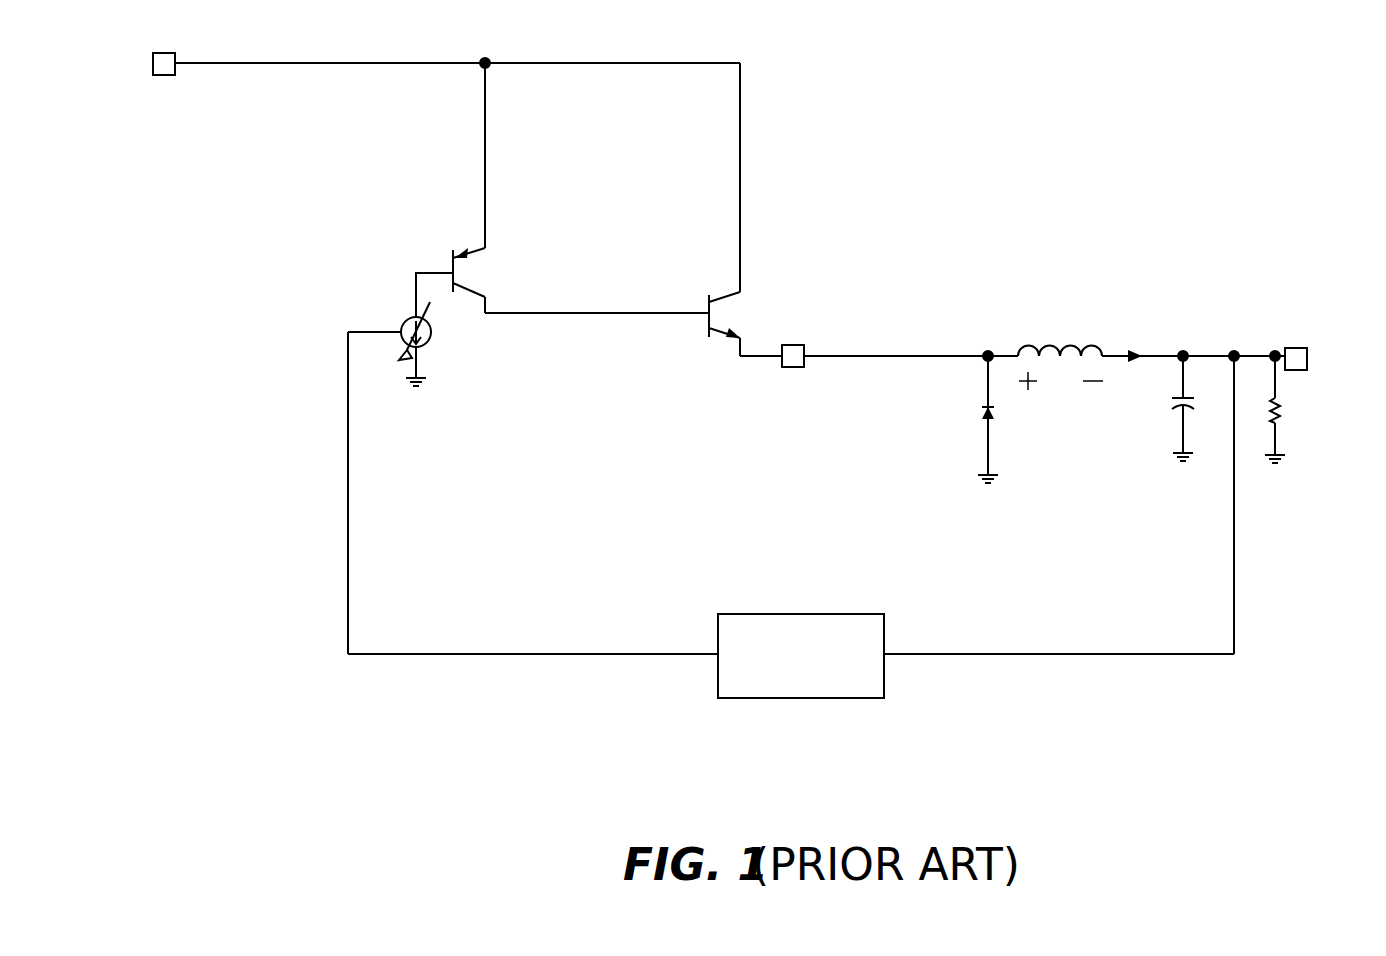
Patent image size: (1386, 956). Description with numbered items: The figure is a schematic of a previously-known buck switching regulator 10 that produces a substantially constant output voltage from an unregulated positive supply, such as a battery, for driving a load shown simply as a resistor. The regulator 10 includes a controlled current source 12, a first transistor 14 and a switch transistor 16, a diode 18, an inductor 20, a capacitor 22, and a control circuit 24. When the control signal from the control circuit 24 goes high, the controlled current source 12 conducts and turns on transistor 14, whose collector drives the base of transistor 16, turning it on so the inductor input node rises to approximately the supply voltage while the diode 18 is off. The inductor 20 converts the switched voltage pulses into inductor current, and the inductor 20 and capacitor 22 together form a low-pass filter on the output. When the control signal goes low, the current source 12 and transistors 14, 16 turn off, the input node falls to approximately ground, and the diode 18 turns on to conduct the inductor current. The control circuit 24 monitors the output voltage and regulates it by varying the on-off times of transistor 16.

The buck switching regulator 10 is at (1222, 225).
The controlled current source 12 is at (433, 335).
The transistor 14 is at (472, 284).
The transistor 16 is at (735, 291).
The diode 18 is at (978, 413).
The inductor 20 is at (1050, 343).
The capacitor 22 is at (1175, 402).
The control circuit 24 is at (787, 613).